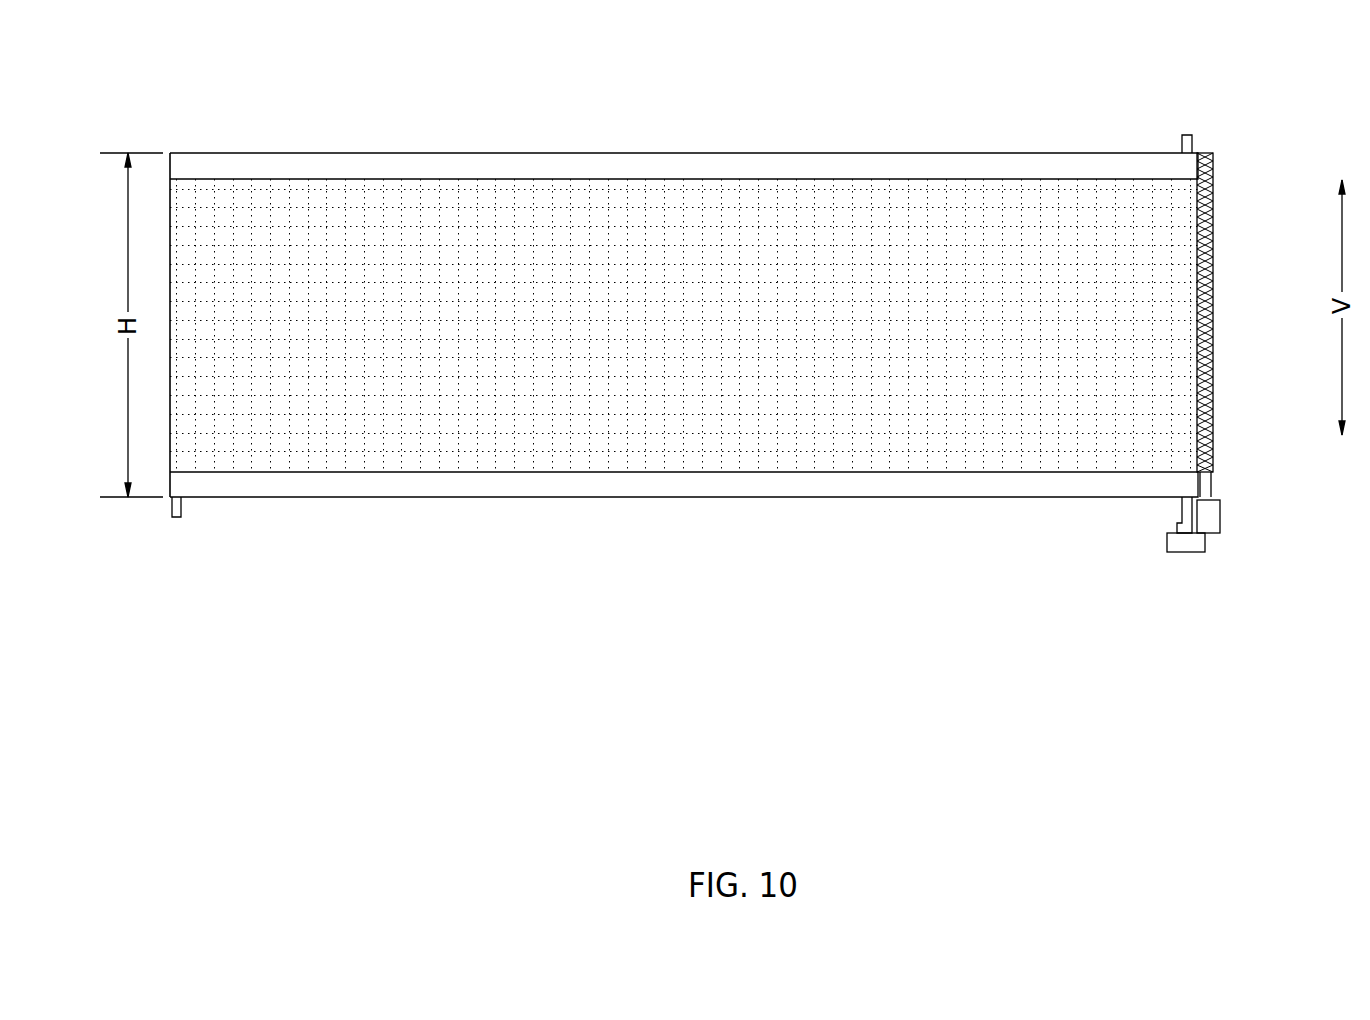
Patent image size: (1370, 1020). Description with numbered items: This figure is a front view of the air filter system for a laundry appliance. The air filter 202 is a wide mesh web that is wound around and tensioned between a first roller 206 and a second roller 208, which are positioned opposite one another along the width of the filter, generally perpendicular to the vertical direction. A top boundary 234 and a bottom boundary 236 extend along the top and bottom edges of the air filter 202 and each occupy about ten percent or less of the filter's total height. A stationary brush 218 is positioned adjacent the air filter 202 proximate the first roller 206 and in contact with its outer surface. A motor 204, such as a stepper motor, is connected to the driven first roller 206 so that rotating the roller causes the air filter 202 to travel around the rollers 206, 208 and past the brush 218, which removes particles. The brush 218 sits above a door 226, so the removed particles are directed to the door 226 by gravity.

The air filter 202 is at (218, 107).
The motor 204 is at (1167, 540).
The first roller 206 is at (1190, 150).
The second roller 208 is at (183, 517).
The brush 218 is at (1208, 213).
The door 226 is at (1218, 517).
The top boundary 234 is at (625, 165).
The bottom boundary 236 is at (632, 488).